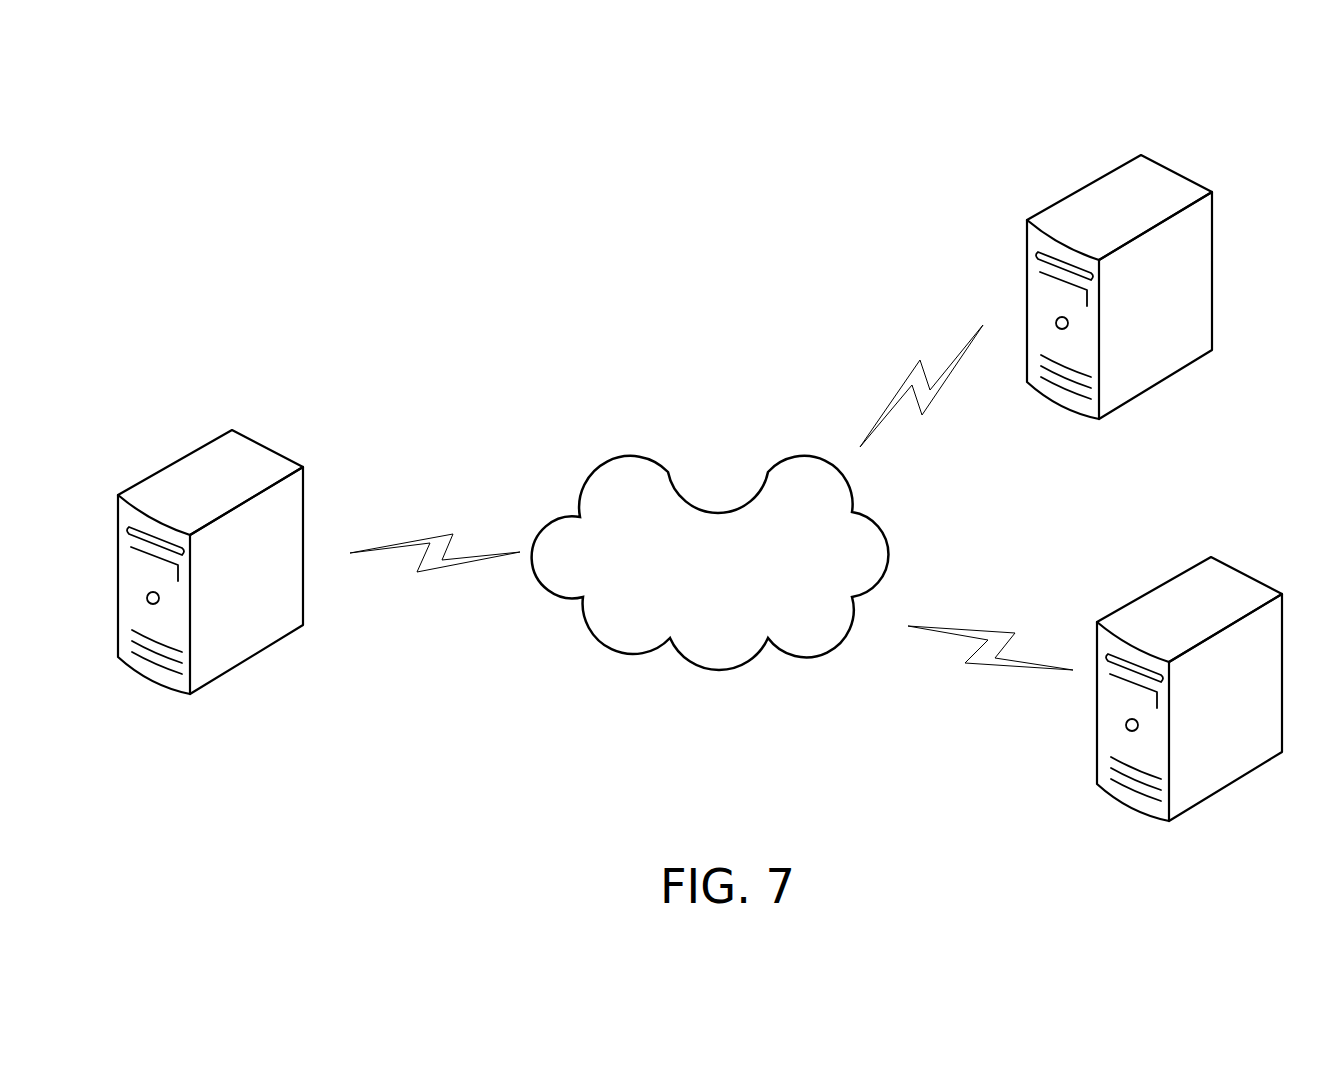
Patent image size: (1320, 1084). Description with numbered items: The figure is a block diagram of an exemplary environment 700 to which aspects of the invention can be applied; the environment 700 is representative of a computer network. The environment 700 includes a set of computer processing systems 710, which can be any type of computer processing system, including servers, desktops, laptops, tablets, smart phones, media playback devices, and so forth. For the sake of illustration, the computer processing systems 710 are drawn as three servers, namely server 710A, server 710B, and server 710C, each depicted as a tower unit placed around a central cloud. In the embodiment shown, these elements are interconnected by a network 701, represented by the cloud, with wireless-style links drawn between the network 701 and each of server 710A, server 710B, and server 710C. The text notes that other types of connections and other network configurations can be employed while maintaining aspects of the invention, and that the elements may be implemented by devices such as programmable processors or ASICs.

The environment 700 is at (285, 132).
The computer processing systems 710 is at (323, 199).
The server 710A is at (282, 582).
The server 710B is at (1192, 306).
The server 710C is at (1259, 721).
The network 701 is at (692, 577).